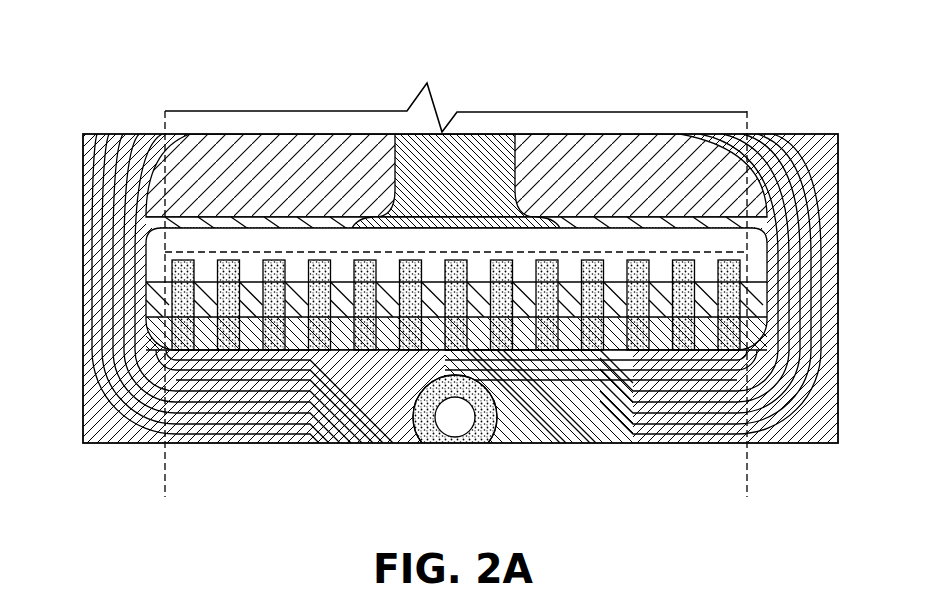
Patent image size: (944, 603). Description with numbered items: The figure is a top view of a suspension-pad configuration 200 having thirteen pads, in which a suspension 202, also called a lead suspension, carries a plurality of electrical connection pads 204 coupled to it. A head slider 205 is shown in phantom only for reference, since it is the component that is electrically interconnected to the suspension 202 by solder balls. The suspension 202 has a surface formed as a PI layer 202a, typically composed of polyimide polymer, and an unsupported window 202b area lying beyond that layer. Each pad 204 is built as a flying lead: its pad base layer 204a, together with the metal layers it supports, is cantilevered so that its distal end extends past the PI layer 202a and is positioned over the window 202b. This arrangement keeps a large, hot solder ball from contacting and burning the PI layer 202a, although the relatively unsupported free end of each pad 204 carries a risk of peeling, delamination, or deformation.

The suspension-pad configuration 200 is at (157, 53).
The suspension 202 is at (838, 262).
The PI layer 202a is at (95, 386).
The window 202b is at (92, 199).
The electrical connection pad 204 is at (747, 481).
The pad base layer 204a is at (158, 293).
The head slider 205 is at (677, 122).